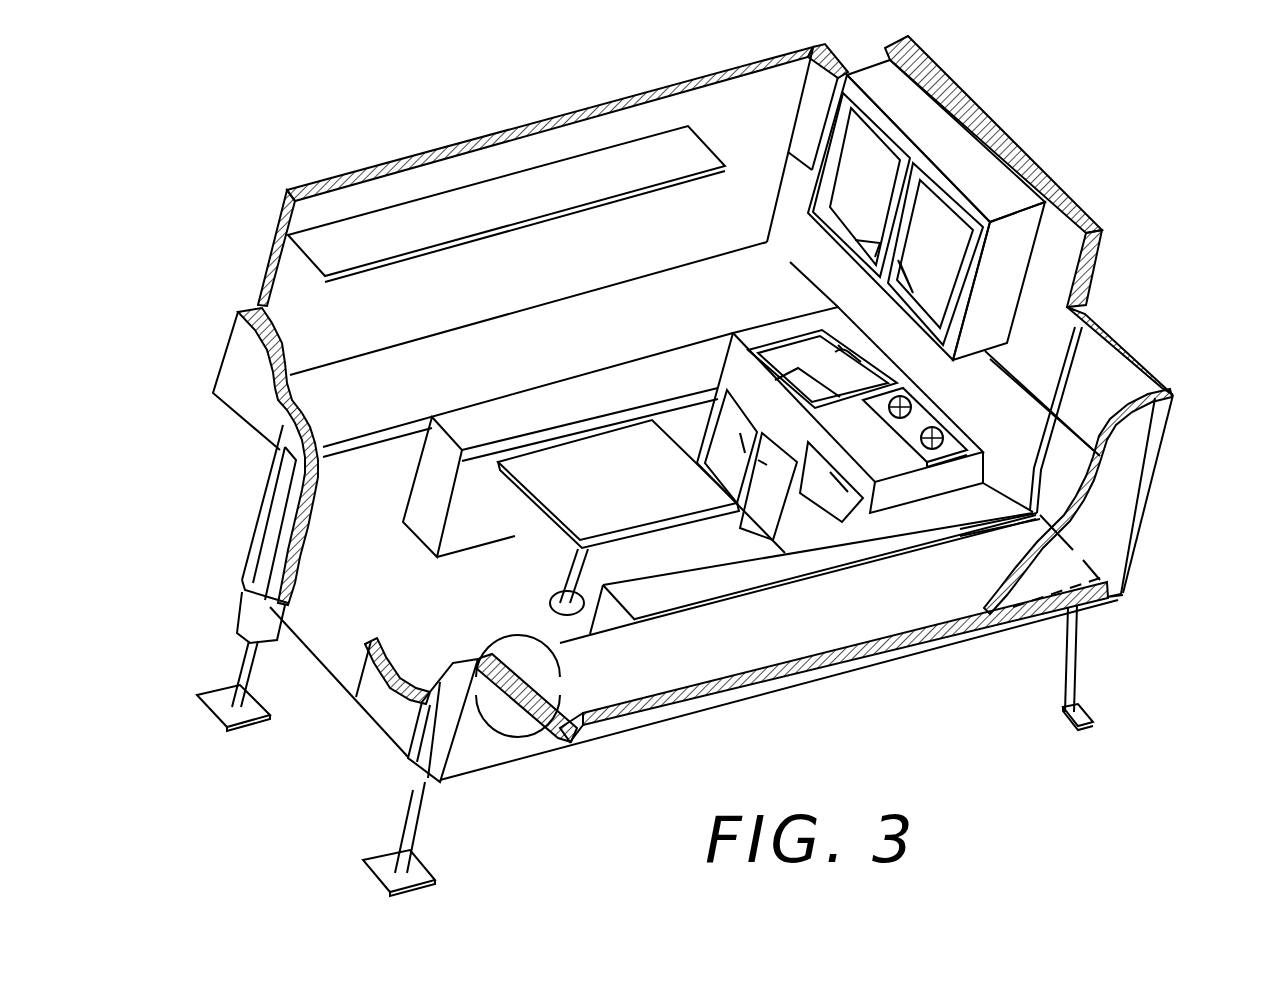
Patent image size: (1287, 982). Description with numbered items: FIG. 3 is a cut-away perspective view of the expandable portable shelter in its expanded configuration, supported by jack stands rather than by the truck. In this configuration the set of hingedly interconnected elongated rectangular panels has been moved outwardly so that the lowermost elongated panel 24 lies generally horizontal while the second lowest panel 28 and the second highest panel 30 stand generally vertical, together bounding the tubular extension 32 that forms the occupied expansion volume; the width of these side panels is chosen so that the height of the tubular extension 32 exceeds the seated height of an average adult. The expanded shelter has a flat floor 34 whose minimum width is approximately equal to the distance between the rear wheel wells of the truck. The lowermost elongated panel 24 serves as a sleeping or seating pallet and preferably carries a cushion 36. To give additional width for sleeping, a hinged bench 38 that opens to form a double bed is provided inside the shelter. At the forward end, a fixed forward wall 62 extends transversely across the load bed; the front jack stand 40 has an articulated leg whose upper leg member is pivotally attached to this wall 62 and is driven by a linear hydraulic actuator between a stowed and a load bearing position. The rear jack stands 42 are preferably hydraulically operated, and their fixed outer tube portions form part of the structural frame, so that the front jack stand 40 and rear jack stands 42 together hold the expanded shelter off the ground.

The lowermost elongated panel 24 is at (640, 718).
The second lowest elongated panel 28 is at (733, 243).
The second highest elongated panel 30 is at (780, 127).
The tubular extension 32 is at (322, 316).
The flat floor 34 is at (377, 628).
The cushion 36 is at (398, 372).
The hinged bench 38 is at (596, 398).
The front jack stand 40 is at (1073, 647).
The rear jack stand 42 is at (377, 863).
The fixed forward wall 62 is at (1040, 438).